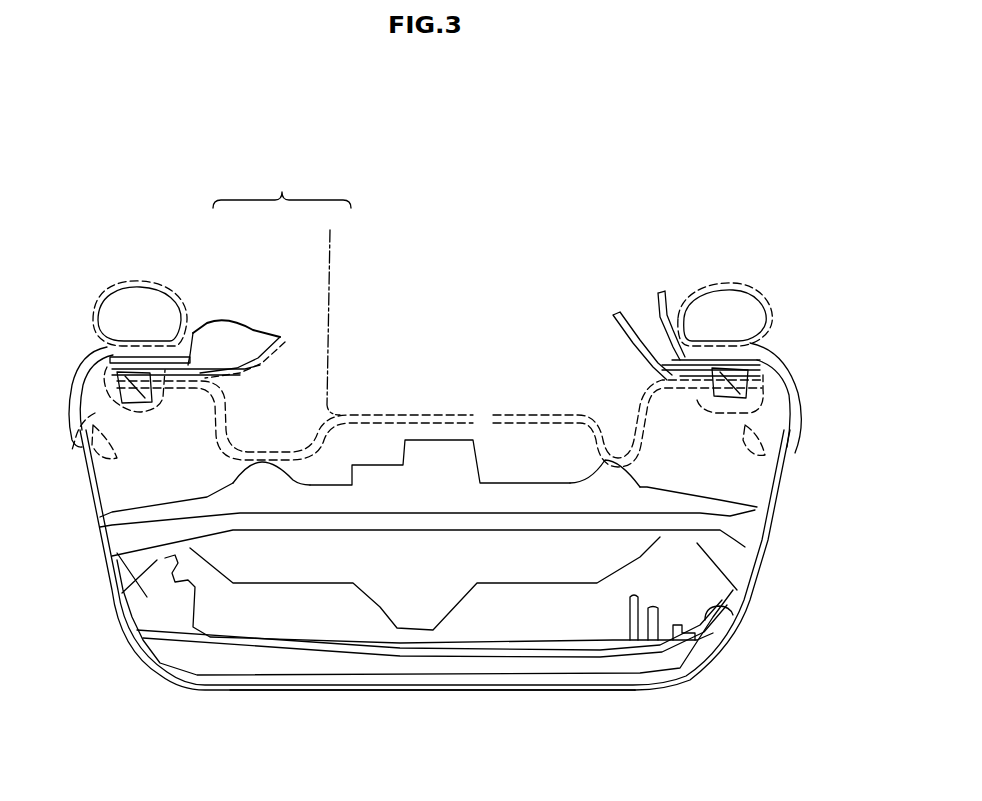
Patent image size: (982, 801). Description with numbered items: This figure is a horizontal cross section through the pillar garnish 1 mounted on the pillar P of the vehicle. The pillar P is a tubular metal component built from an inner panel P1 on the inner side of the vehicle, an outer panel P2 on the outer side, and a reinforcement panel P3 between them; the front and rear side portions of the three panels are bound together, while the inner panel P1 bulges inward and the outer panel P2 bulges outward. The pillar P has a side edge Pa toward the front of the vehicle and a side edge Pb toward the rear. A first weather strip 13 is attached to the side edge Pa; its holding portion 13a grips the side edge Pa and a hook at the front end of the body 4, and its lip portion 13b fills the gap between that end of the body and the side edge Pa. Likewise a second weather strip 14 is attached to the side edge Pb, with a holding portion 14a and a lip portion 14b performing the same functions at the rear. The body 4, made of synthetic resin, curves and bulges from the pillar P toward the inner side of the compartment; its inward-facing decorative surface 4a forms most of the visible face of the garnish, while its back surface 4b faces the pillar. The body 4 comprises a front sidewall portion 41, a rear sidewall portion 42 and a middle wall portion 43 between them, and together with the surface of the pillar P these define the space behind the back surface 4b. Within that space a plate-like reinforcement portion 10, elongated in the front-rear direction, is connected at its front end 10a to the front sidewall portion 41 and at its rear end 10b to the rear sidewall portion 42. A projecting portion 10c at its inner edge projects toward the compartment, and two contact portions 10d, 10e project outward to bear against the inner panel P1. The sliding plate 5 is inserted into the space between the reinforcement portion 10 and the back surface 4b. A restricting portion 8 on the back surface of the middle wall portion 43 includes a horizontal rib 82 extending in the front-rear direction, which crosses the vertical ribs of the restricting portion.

The pillar garnish 1 is at (740, 690).
The body 4 is at (561, 702).
The decorative surface 4a is at (625, 688).
The back surface 4b is at (707, 607).
The sliding plate 5 is at (271, 661).
The restricting portion 8 is at (478, 681).
The reinforcement portion 10 is at (534, 467).
The front end 10a is at (115, 520).
The rear end 10b is at (733, 517).
The projecting portion 10c is at (430, 618).
The contact portion 10d is at (263, 470).
The contact portion 10e is at (608, 468).
The first weather strip 13 is at (105, 297).
The holding portion 13a is at (165, 393).
The lip portion 13b is at (65, 400).
The second weather strip 14 is at (757, 290).
The holding portion 14a is at (695, 387).
The lip portion 14b is at (800, 408).
The front sidewall portion 41 is at (117, 548).
The rear sidewall portion 42 is at (752, 535).
The middle wall portion 43 is at (401, 677).
The horizontal rib 82 is at (335, 665).
The pillar P is at (282, 186).
The inner panel P1 is at (330, 308).
The outer panel P2 is at (212, 325).
The reinforcement panel P3 is at (279, 338).
The side edge Pa is at (118, 395).
The side edge Pb is at (737, 368).